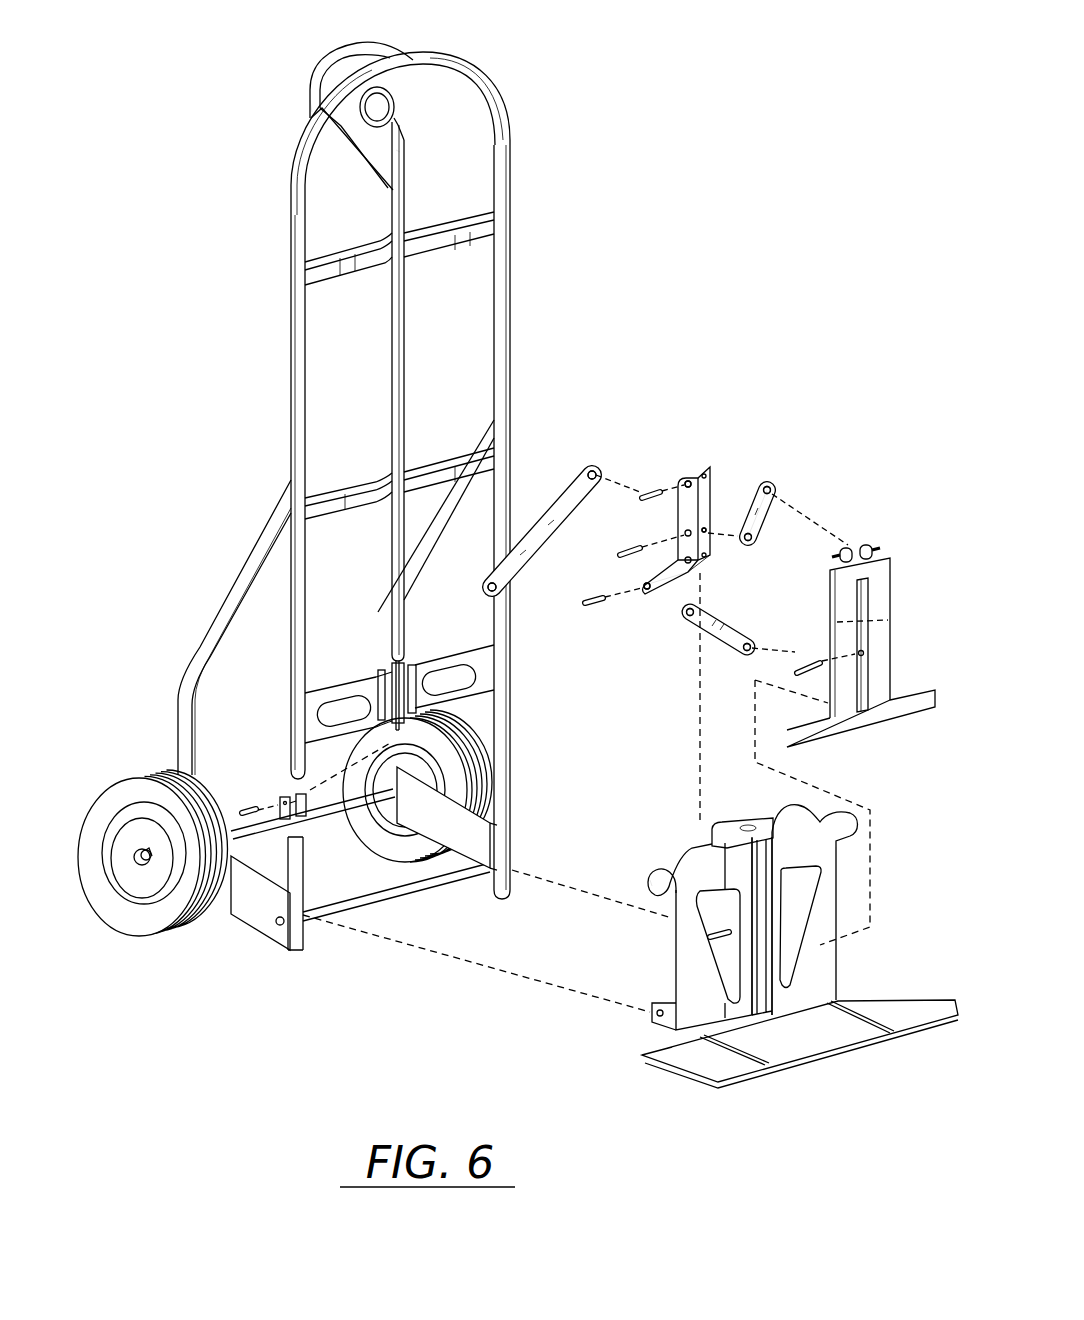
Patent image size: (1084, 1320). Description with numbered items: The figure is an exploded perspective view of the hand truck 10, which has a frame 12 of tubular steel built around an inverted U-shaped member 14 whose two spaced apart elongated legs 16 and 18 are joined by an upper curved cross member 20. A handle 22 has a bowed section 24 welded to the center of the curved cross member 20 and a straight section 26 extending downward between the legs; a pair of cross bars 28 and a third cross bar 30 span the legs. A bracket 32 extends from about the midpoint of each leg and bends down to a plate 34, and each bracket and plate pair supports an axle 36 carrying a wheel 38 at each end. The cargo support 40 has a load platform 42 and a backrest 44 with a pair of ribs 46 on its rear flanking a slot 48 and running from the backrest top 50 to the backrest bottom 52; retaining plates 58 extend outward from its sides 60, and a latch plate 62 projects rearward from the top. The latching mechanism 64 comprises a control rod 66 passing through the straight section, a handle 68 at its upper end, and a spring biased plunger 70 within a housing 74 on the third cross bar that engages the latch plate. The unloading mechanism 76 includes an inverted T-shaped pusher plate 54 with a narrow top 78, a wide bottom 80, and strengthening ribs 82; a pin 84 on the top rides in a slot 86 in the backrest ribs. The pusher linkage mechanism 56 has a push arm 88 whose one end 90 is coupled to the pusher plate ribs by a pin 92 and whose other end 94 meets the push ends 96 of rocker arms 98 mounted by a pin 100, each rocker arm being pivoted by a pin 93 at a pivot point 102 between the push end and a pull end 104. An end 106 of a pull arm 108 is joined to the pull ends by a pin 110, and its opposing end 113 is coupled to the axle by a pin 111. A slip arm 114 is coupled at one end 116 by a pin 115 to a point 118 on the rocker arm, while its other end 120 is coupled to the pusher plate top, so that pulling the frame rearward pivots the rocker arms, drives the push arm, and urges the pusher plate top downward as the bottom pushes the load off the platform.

The hand truck 10 is at (575, 126).
The frame 12 is at (524, 392).
The inverted U-shaped member 14 is at (470, 70).
The elongated leg 16 is at (511, 322).
The elongated leg 18 is at (291, 340).
The upper curved cross member 20 is at (408, 72).
The handle 22 is at (300, 72).
The bowed section 24 is at (316, 97).
The straight section 26 is at (405, 393).
The cross bars 28 is at (330, 275).
The third cross bar 30 is at (318, 700).
The bracket 32 is at (228, 612).
The plate 34 is at (255, 908).
The axle 36 is at (310, 825).
The wheel 38 is at (150, 770).
The cargo support 40 is at (769, 940).
The load platform 42 is at (697, 1057).
The backrest 44 is at (840, 970).
The ribs 46 is at (775, 962).
The slot 48 is at (777, 1007).
The backrest top 50 is at (805, 810).
The backrest bottom 52 is at (860, 998).
The pusher plate 54 is at (885, 676).
The pusher linkage mechanism 56 is at (752, 480).
The retaining plates 58 is at (852, 832).
The sides 60 is at (832, 893).
The latch plate 62 is at (735, 822).
The latching mechanism 64 is at (411, 665).
The control rod 66 is at (399, 155).
The handle 68 is at (366, 126).
The spring biased plunger 70 is at (417, 723).
The housing 74 is at (384, 676).
The unloading mechanism 76 is at (876, 577).
The narrow top 78 is at (893, 575).
The wide bottom 80 is at (930, 702).
The ribs 82 is at (863, 612).
The pin 84 is at (870, 548).
The slot 86 is at (768, 858).
The push arm 88 is at (708, 640).
The end of push arm 90 is at (746, 655).
The pin 92 is at (802, 676).
The pin 93 is at (722, 933).
The other end of push arm 94 is at (686, 618).
The push end 96 is at (642, 586).
The rocker arm 98 is at (688, 500).
The pin 100 is at (588, 606).
The pivot point 102 is at (690, 572).
The pull end 104 is at (700, 468).
The end of pull arm 106 is at (596, 468).
The pull arm 108 is at (548, 500).
The pin 110 is at (644, 490).
The pin 111 is at (252, 803).
The opposing end of pull arm 113 is at (500, 592).
The slip arm 114 is at (771, 510).
The pin 115 is at (618, 553).
The end of slip arm 116 is at (752, 546).
The point 118 is at (706, 526).
The other end of slip arm 120 is at (770, 490).